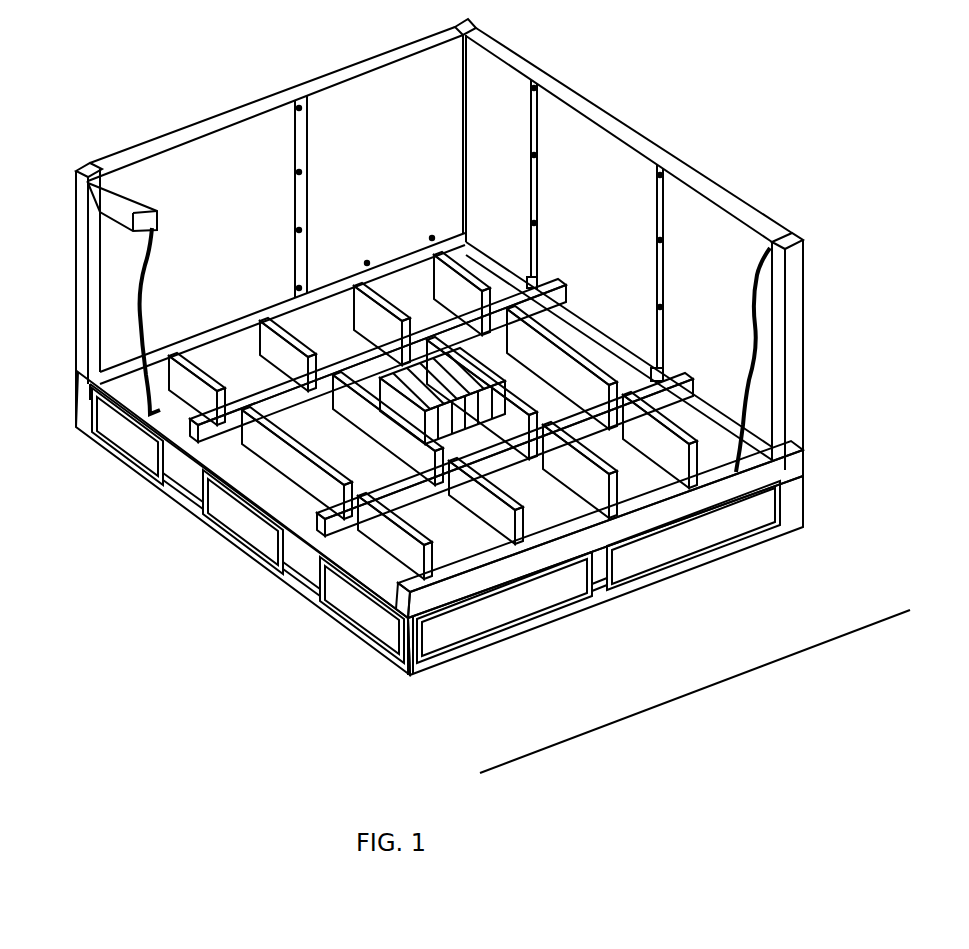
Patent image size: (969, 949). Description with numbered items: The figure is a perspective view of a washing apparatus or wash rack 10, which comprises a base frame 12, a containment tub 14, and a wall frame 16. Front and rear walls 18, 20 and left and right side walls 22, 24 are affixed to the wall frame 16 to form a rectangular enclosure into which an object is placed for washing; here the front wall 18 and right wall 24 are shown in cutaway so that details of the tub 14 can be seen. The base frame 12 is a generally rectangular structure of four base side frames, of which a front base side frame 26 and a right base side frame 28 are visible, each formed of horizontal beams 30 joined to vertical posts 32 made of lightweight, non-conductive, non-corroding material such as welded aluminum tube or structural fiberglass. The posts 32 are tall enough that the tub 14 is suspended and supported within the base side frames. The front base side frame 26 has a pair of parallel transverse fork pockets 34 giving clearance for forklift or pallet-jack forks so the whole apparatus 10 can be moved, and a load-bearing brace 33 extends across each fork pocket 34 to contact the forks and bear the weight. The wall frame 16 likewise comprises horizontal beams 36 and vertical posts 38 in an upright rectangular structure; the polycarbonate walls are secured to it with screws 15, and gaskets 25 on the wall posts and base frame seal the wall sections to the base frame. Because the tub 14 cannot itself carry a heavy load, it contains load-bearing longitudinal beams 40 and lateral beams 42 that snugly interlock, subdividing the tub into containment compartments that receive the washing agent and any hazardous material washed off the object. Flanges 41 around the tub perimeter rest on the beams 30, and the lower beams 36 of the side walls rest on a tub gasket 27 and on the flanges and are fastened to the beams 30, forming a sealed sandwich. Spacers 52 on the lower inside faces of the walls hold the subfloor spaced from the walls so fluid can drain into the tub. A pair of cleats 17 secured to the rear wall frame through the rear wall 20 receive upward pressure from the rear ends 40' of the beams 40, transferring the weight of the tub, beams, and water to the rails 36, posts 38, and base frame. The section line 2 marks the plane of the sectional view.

The washing apparatus 10 is at (190, 50).
The base frame 12 is at (224, 561).
The containment tub 14 is at (494, 549).
The screws 15 is at (300, 172).
The wall frame 16 is at (158, 115).
The cleats 17 is at (652, 372).
The front wall 18 is at (107, 293).
The rear wall 20 is at (613, 195).
The left side wall 22 is at (230, 222).
The right side wall 24 is at (767, 283).
The gaskets 25 is at (770, 357).
The front base side frame 26 is at (377, 653).
The tub gasket 27 is at (703, 497).
The right base side frame 28 is at (447, 660).
The horizontal beams 30 is at (93, 386).
The vertical posts 32 is at (403, 673).
The load-bearing brace 33 is at (177, 493).
The fork pockets 34 is at (176, 519).
The horizontal beams 36 is at (318, 77).
The vertical posts 38 is at (530, 98).
The longitudinal beams 40 is at (441, 407).
The rear ends of the beams 40' is at (501, 258).
The flanges 41 is at (480, 595).
The lateral beams 42 is at (385, 433).
The spacers 52 is at (243, 308).
The section line 2- 2 is at (910, 610).